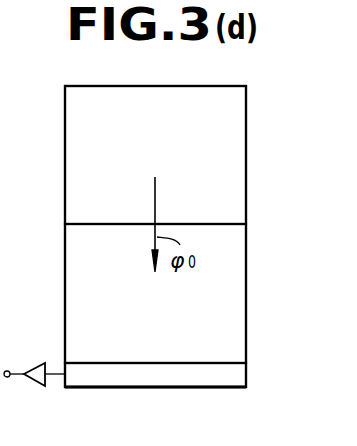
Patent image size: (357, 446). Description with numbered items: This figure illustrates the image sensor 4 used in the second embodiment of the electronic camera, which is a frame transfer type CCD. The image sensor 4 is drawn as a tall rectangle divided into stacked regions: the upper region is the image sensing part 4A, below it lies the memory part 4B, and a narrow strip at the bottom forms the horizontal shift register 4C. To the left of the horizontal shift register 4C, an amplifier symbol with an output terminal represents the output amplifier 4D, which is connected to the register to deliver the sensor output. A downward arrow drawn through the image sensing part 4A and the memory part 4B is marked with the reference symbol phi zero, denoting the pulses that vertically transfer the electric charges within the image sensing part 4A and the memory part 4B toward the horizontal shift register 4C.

The image sensor 4 is at (64, 140).
The image sensing part 4A is at (242, 122).
The memory part 4B is at (242, 257).
The horizontal shift register 4C is at (247, 380).
The output amplifier 4D is at (44, 363).